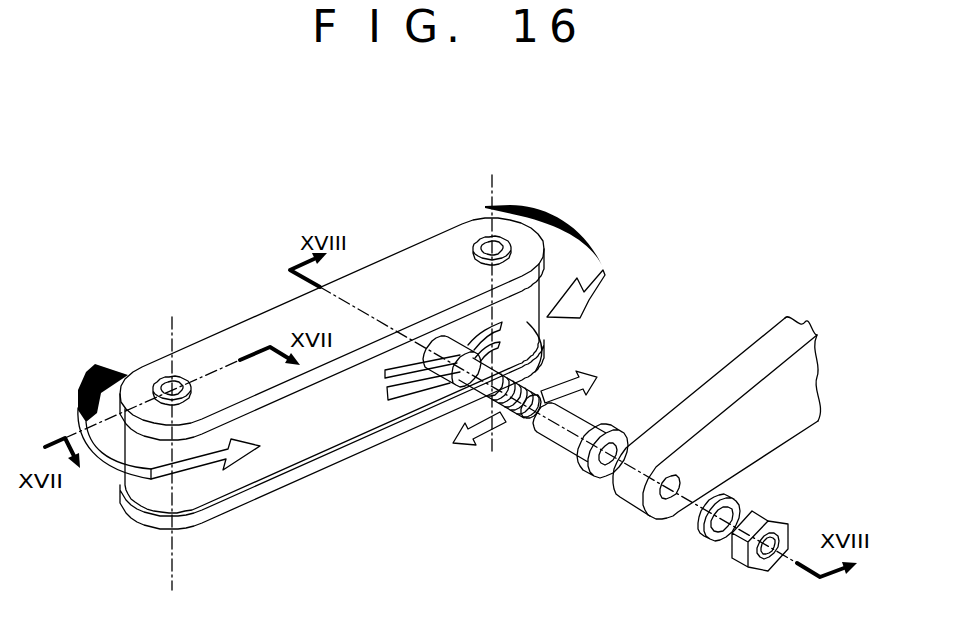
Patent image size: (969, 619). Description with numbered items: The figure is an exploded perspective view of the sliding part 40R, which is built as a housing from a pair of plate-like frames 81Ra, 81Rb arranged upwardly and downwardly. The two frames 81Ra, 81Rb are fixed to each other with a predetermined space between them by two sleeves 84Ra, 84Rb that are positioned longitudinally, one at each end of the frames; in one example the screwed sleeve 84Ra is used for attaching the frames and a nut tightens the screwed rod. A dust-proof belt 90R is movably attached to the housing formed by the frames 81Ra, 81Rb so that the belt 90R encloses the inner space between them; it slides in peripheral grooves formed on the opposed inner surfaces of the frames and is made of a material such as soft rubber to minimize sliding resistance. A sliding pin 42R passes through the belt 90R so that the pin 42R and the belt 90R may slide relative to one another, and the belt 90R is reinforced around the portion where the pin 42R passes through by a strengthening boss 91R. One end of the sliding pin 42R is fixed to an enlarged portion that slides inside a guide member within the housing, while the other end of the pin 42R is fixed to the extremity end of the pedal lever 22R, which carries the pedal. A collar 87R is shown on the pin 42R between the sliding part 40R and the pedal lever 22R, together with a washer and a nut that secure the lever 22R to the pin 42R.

The sliding part 40R is at (508, 556).
The plate-like frame 81Ra is at (243, 330).
The plate-like frame 81Rb is at (288, 480).
The dust-proof belt 90R is at (160, 500).
The sleeve 84Ra is at (157, 380).
The sleeve 84Rb is at (476, 250).
The strengthening boss 91R is at (418, 388).
The sliding pin 42R is at (507, 427).
The sleeve collar 87R is at (590, 427).
The pedal lever 22R is at (755, 347).